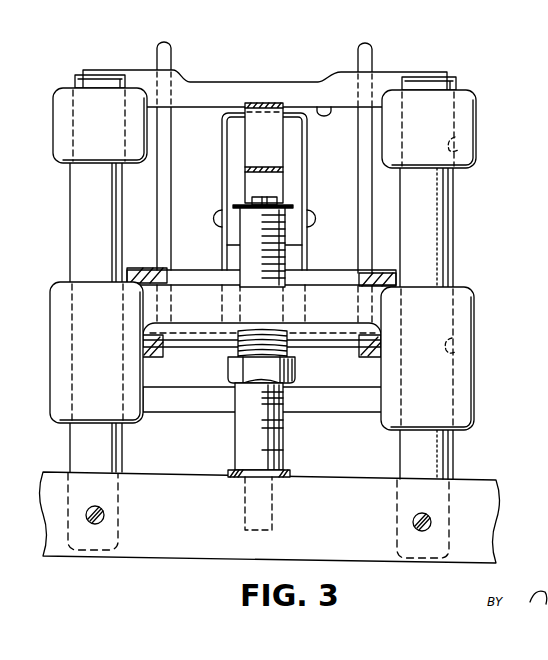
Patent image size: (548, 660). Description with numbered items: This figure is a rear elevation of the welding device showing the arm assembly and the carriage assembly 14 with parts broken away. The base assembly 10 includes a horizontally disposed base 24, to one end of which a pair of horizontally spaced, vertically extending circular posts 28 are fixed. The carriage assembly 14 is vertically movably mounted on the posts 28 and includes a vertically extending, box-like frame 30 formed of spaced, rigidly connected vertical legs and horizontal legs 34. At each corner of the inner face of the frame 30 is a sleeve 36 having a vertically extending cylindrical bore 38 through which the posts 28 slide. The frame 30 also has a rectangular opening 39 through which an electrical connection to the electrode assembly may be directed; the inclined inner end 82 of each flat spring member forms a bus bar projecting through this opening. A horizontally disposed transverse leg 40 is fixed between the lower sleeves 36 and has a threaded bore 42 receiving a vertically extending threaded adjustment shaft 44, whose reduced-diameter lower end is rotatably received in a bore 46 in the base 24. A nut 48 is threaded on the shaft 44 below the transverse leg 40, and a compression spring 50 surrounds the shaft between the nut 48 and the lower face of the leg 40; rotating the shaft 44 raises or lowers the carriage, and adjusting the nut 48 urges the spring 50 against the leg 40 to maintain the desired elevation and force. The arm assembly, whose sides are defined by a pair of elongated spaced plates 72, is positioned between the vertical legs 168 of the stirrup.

The base assembly 10 is at (200, 559).
The carriage assembly 14 is at (542, 414).
The base 24 is at (165, 472).
The posts 28 is at (123, 450).
The frame 30 is at (457, 196).
The horizontal legs 34 is at (198, 82).
The sleeve 36 is at (53, 98).
The cylindrical bore 38 is at (476, 153).
The rectangular opening 39 is at (322, 107).
The transverse leg 40 is at (335, 270).
The threaded bore 42 is at (285, 322).
The threaded adjustment shaft 44 is at (283, 422).
The bore 46 is at (271, 508).
The nut 48 is at (296, 378).
The compression spring 50 is at (238, 352).
The plates 72 is at (222, 253).
The inner end 82 is at (252, 180).
The vertical legs 168 is at (172, 52).